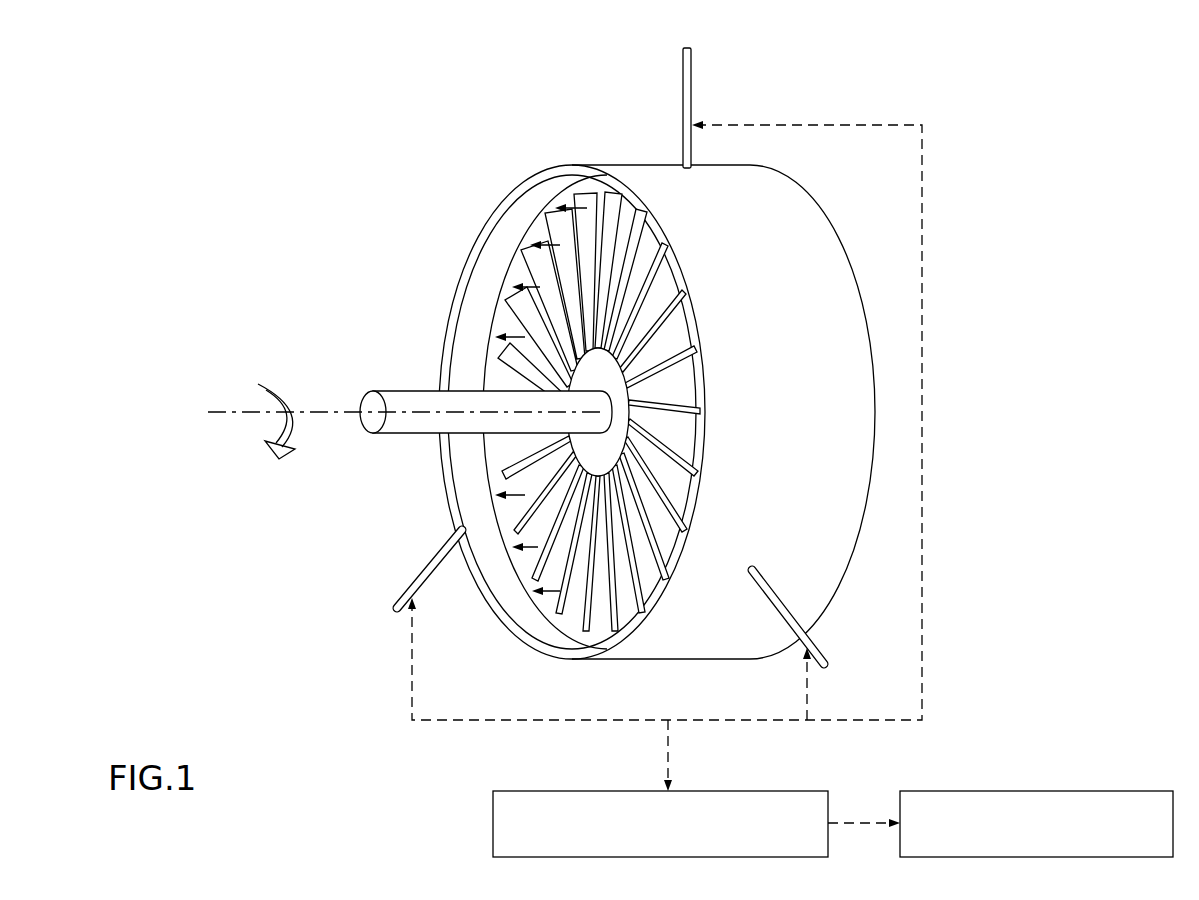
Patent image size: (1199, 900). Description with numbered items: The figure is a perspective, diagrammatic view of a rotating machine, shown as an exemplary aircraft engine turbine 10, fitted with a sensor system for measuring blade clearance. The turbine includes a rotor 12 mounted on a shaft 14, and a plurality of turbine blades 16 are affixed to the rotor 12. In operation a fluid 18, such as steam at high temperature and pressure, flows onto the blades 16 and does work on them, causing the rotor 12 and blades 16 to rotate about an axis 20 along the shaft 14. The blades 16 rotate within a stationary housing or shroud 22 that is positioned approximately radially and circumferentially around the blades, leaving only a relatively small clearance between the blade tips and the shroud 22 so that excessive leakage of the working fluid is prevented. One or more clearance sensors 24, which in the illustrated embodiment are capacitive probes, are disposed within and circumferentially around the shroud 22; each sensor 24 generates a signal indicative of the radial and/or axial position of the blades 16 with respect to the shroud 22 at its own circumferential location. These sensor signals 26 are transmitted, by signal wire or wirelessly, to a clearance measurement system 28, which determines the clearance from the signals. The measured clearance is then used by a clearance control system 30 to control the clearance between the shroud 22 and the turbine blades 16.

The aircraft engine turbine 10 is at (143, 60).
The rotor 12 is at (623, 420).
The shaft 14 is at (398, 391).
The turbine blades 16 is at (610, 200).
The fluid 18 is at (550, 240).
The axis 20 is at (217, 410).
The shroud 22 is at (838, 262).
The clearance sensors 24 is at (692, 80).
The sensor signals 26 is at (922, 370).
The clearance measurement system 28 is at (768, 791).
The clearance control system 30 is at (1098, 791).